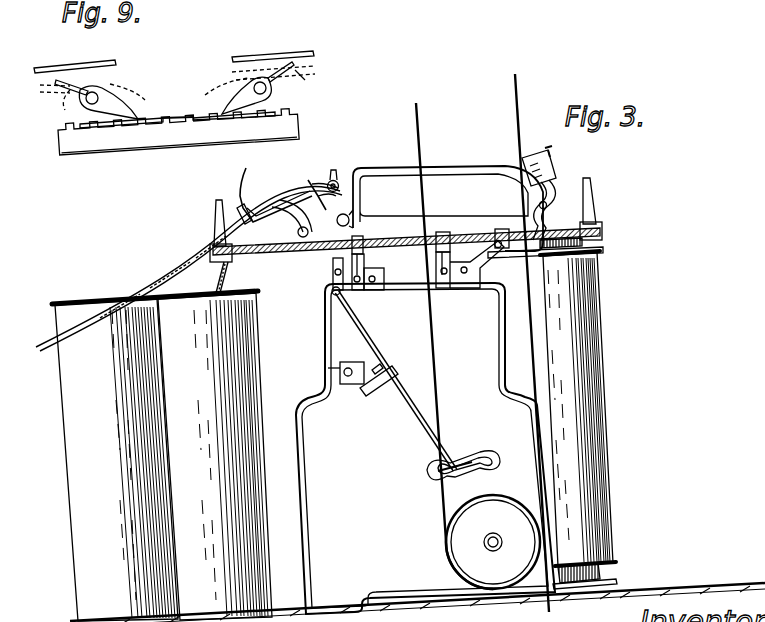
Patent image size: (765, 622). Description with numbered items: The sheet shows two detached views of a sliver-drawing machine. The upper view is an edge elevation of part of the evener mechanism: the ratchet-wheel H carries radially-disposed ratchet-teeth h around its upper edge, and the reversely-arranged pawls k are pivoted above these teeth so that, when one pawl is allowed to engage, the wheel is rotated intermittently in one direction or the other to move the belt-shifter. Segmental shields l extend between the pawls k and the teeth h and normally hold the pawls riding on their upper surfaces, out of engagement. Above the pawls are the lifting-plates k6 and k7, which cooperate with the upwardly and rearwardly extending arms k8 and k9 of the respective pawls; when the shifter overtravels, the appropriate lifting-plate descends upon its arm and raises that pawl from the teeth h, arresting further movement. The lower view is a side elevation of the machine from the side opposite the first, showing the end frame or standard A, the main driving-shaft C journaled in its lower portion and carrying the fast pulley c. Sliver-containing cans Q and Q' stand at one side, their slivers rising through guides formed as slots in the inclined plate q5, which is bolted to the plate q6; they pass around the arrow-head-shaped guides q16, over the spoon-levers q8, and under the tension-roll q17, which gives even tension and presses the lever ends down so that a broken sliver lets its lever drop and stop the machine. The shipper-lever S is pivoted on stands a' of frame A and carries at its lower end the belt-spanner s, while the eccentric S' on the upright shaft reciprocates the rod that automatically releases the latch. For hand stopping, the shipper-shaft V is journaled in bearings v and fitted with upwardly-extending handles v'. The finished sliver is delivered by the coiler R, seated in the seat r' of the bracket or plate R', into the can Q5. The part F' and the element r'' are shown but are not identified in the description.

In FIG. 9, the lifting-plate k6 is at (60, 68).
In FIG. 9, the lifting-plate k7 is at (250, 56).
In FIG. 9, the upwardly and rearwardly extending arm k8 is at (62, 90).
In FIG. 9, the upwardly and rearwardly extending arm k9 is at (300, 82).
In FIG. 9, the pawl k is at (150, 100).
In FIG. 9, the ratchet-teeth h is at (175, 125).
In FIG. 9, the shield l is at (110, 130).
In FIG. 9, the ratchet-wheel H is at (170, 146).
In FIG. 3, the frame part F' is at (269, 7).
In FIG. 3, the sliver-containing can Q is at (155, 456).
In FIG. 3, the sliver-containing can Q' is at (215, 456).
In FIG. 3, the can Q5 is at (597, 378).
In FIG. 3, the roll support r'' is at (590, 576).
In FIG. 3, the end frame or standard A is at (425, 448).
In FIG. 3, the main driving-shaft C is at (490, 537).
In FIG. 3, the fast pulley c is at (535, 556).
In FIG. 3, the shipper-lever S is at (395, 381).
In FIG. 3, the eccentric S' is at (352, 285).
In FIG. 3, the belt-spanner s is at (432, 470).
In FIG. 3, the stand a' is at (363, 390).
In FIG. 3, the bearing v is at (406, 253).
In FIG. 3, the handle v' is at (402, 217).
In FIG. 3, the shipper-shaft V is at (385, 240).
In FIG. 3, the coiler R is at (549, 193).
In FIG. 3, the seat r' is at (584, 236).
In FIG. 3, the bracket or plate R' is at (561, 255).
In FIG. 3, the plate q5 is at (240, 192).
In FIG. 3, the arrow-head-shaped guide q16 is at (244, 206).
In FIG. 3, the plate q6 is at (285, 225).
In FIG. 3, the spoon-lever q8 is at (309, 182).
In FIG. 3, the tension-roll q17 is at (338, 183).